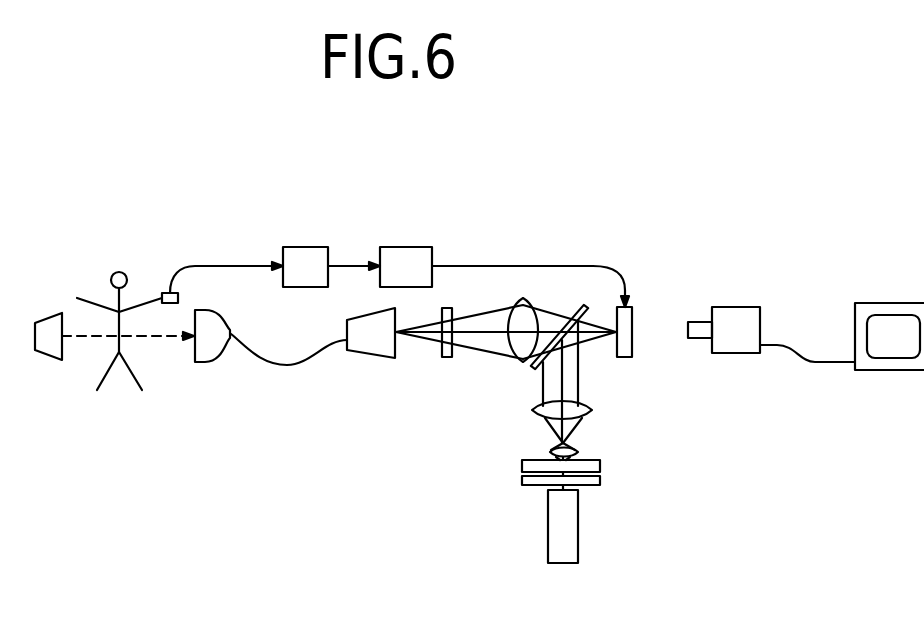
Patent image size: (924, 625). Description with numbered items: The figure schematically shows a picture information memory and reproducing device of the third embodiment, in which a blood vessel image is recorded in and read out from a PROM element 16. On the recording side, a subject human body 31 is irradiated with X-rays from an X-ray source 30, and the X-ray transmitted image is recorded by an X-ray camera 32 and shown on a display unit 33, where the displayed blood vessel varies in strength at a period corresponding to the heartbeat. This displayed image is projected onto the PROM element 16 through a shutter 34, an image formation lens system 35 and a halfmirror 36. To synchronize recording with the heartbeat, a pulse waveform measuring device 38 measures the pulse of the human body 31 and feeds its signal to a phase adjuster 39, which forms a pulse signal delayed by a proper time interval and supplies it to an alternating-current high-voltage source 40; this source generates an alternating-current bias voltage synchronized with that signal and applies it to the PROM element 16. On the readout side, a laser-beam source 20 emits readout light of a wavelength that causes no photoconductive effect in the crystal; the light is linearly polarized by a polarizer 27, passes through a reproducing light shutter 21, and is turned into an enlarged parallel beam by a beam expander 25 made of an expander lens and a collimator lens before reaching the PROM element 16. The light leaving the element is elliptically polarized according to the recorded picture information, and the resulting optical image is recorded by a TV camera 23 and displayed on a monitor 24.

The PROM element 16 is at (633, 317).
The laser-beam source 20 is at (572, 540).
The reproducing light shutter 21 is at (600, 463).
The TV camera 23 is at (742, 343).
The monitor 24 is at (890, 370).
The beam expander 25 is at (600, 402).
The polarizer 27 is at (600, 480).
The X-ray source 30 is at (52, 348).
The subject human body 31 is at (103, 378).
The X-ray camera 32 is at (210, 348).
The display unit 33 is at (373, 350).
The shutter 34 is at (445, 357).
The image formation lens system 35 is at (518, 362).
The halfmirror 36 is at (578, 306).
The pulse waveform measuring device 38 is at (165, 293).
The phase adjuster 39 is at (310, 247).
The alternating-current high-voltage source 40 is at (412, 247).